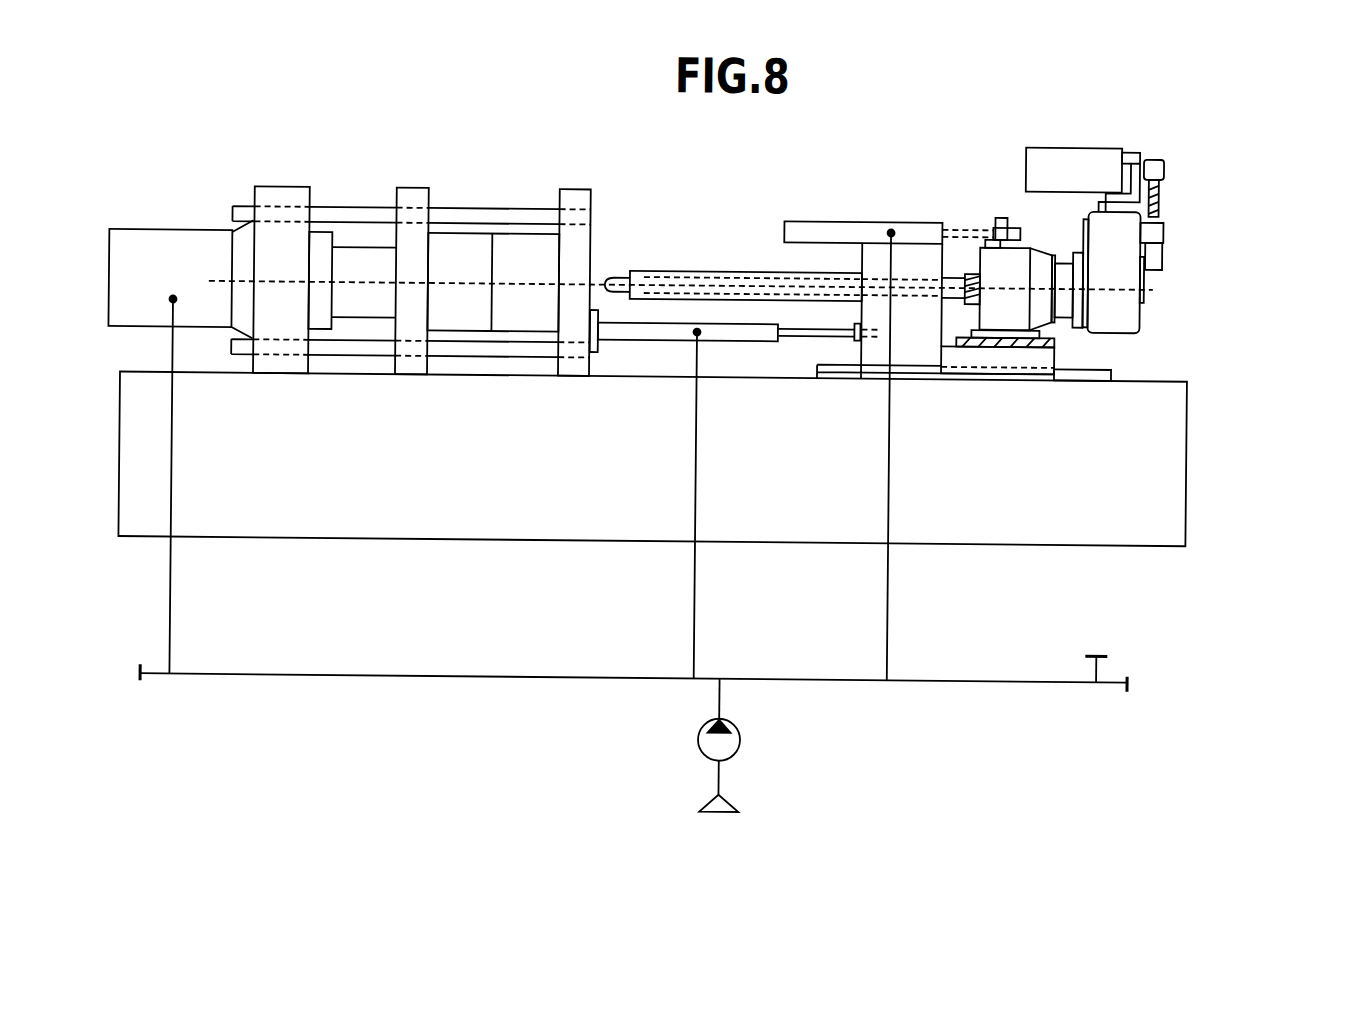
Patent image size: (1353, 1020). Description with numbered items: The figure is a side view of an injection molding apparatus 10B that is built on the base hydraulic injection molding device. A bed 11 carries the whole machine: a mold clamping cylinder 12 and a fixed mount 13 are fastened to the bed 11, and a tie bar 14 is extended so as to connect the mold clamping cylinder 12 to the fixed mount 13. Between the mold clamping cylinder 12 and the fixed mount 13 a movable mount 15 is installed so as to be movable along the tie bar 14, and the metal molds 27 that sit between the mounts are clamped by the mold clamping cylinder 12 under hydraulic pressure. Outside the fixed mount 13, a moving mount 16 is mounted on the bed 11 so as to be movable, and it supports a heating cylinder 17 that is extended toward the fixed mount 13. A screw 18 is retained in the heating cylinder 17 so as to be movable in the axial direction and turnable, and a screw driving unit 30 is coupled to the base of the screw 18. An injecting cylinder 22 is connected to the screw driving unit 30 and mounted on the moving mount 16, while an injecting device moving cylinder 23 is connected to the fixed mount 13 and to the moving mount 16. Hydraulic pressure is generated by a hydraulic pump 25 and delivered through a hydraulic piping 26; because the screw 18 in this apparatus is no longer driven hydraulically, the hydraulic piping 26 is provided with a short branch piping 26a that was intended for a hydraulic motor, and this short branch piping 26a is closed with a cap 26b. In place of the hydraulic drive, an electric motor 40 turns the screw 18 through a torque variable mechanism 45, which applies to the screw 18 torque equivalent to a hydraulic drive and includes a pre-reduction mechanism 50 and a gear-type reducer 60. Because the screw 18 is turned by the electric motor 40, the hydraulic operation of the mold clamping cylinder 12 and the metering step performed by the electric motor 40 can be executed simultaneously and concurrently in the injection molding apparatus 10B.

The injection molding apparatus 10B is at (1196, 102).
The bed 11 is at (1169, 458).
The mold clamping cylinder 12 is at (278, 188).
The fixed mount 13 is at (568, 188).
The tie bar 14 is at (461, 196).
The movable mount 15 is at (404, 187).
The moving mount 16 is at (913, 252).
The heating cylinder 17 is at (665, 264).
The screw 18 is at (725, 274).
The injecting cylinder 22 is at (813, 225).
The injecting device moving cylinder 23 is at (750, 326).
The hydraulic pump 25 is at (734, 733).
The hydraulic piping 26 is at (531, 674).
The short branch piping 26a is at (1103, 658).
The cap 26b is at (1093, 641).
The metal molds 27 is at (513, 254).
The screw driving unit 30 is at (1020, 254).
The electric motor 40 is at (1069, 114).
The torque variable mechanism 45 is at (1254, 196).
The pre-reduction mechanism 50 is at (1197, 231).
The gear-type reducer 60 is at (1161, 298).